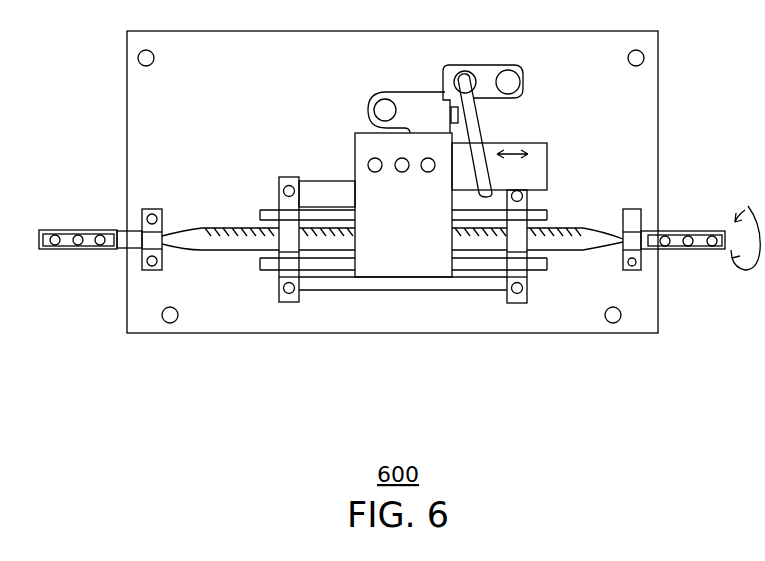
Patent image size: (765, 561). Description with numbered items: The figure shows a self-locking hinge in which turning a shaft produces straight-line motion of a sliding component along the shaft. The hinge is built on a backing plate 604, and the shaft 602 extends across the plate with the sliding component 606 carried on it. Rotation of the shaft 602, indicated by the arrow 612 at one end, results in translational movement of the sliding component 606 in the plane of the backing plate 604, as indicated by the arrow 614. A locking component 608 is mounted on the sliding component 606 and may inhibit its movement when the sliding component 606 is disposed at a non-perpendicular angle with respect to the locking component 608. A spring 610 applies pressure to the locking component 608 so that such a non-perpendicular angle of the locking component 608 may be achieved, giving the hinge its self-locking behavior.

The shaft 602 is at (186, 244).
The backing plate 604 is at (623, 80).
The sliding component 606 is at (533, 172).
The locking component 608 is at (460, 78).
The spring 610 is at (447, 98).
The arrow 612 is at (748, 206).
The arrow 614 is at (517, 143).